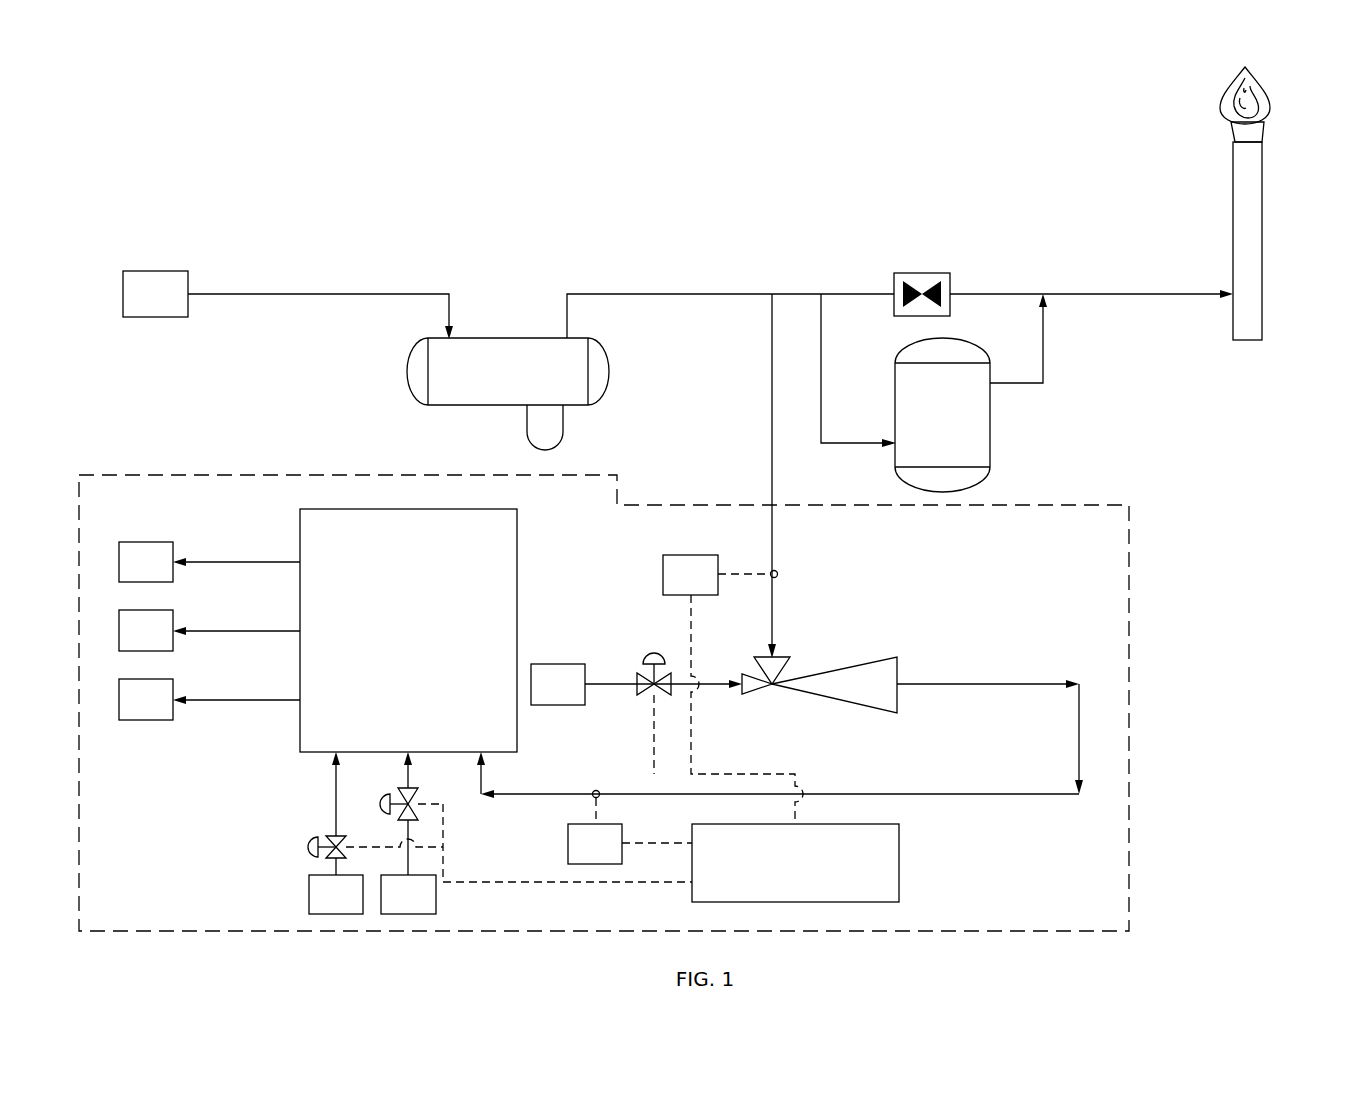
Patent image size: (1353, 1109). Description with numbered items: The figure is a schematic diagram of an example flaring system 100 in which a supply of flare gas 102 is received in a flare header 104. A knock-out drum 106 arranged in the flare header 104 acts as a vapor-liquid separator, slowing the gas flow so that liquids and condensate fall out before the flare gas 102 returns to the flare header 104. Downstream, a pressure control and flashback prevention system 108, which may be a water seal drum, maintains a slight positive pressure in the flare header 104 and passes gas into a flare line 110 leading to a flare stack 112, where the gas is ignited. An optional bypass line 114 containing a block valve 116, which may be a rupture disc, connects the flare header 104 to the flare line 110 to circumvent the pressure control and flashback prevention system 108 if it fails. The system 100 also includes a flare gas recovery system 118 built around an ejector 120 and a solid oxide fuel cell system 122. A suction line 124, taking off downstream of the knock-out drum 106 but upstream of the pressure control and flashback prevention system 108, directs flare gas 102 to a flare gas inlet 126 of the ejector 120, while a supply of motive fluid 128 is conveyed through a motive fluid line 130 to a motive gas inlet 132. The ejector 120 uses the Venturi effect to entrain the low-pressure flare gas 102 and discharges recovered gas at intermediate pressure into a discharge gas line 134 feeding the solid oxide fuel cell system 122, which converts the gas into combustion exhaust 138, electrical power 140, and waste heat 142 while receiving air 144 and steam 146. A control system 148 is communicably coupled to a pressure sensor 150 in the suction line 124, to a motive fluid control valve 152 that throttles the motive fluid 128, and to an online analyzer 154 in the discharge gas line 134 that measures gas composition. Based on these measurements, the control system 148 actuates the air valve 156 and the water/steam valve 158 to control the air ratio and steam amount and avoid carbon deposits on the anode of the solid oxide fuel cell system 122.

The flaring system 100 is at (160, 105).
The flare gas 102 is at (140, 306).
The flare header 104 is at (323, 292).
The knock-out drum 106 is at (490, 384).
The pressure control and flashback prevention system 108 is at (924, 425).
The flare line 110 is at (1118, 292).
The flare stack 112 is at (1262, 220).
The bypass line 114 is at (845, 292).
The block valve 116 is at (938, 272).
The flare gas recovery system 118 is at (1130, 551).
The ejector 120 is at (866, 628).
The solid oxide fuel cell system 122 is at (389, 642).
The suction line 124 is at (770, 376).
The flare gas inlet 126 is at (788, 660).
The motive fluid 128 is at (542, 696).
The motive fluid line 130 is at (600, 683).
The motive gas inlet 132 is at (756, 696).
The discharge gas line 134 is at (1080, 737).
The combustion exhaust 138 is at (130, 574).
The electrical power 140 is at (130, 643).
The waste heat 142 is at (130, 712).
The air 144 is at (320, 906).
The steam 146 is at (392, 906).
The control system 148 is at (779, 874).
The pressure sensor 150 is at (674, 587).
The motive fluid control valve 152 is at (652, 655).
The online analyzer 154 is at (579, 856).
The air valve 156 is at (311, 840).
The water/steam valve 158 is at (387, 797).